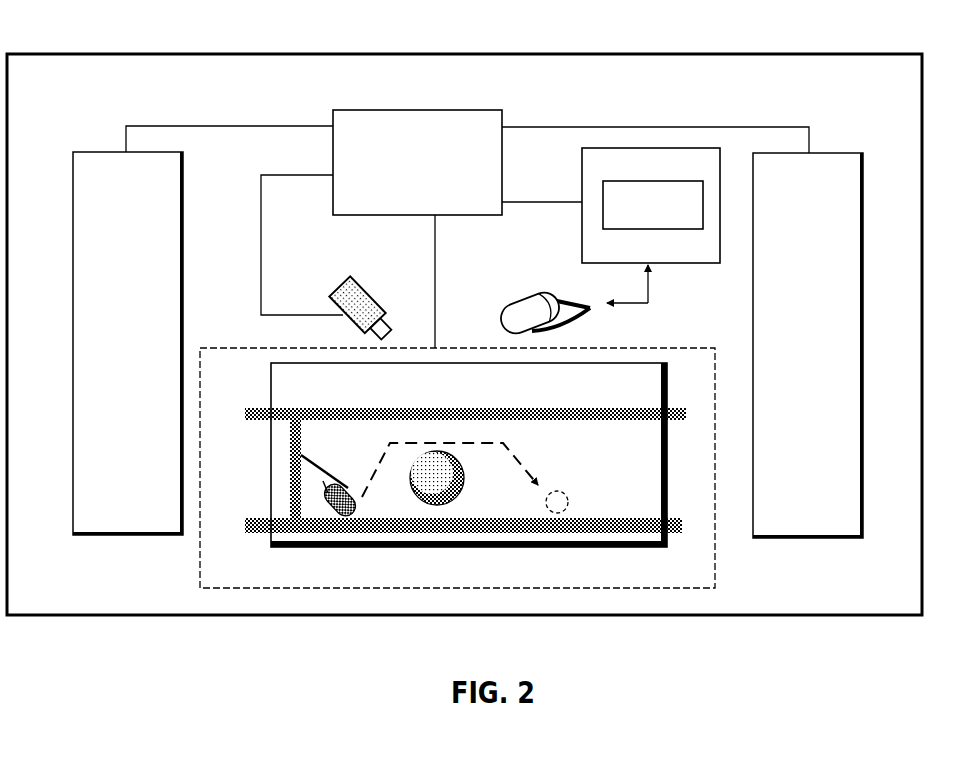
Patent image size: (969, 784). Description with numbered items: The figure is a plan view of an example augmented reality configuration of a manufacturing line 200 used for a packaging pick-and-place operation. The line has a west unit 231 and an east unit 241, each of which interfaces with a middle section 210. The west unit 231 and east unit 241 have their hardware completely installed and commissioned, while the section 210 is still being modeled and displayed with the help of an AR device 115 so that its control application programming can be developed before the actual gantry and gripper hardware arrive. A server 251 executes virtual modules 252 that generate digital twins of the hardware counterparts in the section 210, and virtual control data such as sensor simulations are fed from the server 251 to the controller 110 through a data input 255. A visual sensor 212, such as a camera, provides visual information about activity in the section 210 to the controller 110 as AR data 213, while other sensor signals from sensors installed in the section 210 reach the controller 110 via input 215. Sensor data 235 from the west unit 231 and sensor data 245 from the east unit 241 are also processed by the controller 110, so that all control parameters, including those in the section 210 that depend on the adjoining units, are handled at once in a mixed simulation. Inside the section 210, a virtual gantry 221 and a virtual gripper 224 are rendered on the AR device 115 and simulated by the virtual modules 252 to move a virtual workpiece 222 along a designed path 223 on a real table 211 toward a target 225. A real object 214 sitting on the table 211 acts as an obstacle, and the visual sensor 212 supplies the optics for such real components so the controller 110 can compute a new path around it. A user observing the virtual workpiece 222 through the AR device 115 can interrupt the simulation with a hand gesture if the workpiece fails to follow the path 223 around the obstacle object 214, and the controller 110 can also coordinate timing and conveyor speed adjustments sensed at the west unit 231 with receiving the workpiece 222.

The manufacturing line 200 is at (113, 54).
The controller 110 is at (373, 110).
The AR device 115 is at (524, 304).
The section 210 is at (608, 348).
The table 211 is at (463, 548).
The visual sensor 212 is at (340, 286).
The AR data input 213 is at (294, 175).
The real object 214 is at (463, 488).
The input 215 is at (436, 262).
The virtual gantry 221 is at (290, 497).
The virtual workpiece 222 is at (357, 512).
The path 223 is at (517, 464).
The virtual gripper 224 is at (316, 463).
The target 225 is at (567, 495).
The west unit 231 is at (113, 537).
The sensor data 235 is at (205, 126).
The east unit 241 is at (808, 540).
The sensor data 245 is at (733, 127).
The server 251 is at (672, 263).
The virtual modules 252 is at (641, 181).
The data input 255 is at (515, 202).